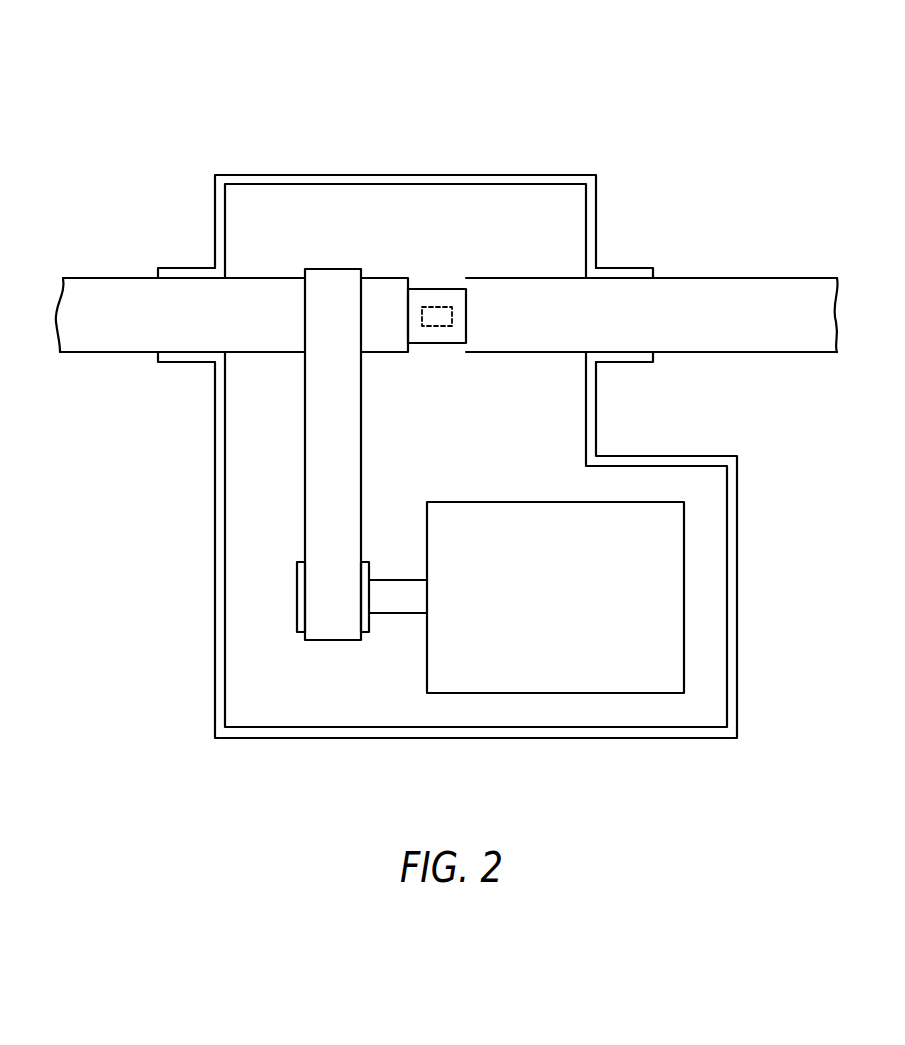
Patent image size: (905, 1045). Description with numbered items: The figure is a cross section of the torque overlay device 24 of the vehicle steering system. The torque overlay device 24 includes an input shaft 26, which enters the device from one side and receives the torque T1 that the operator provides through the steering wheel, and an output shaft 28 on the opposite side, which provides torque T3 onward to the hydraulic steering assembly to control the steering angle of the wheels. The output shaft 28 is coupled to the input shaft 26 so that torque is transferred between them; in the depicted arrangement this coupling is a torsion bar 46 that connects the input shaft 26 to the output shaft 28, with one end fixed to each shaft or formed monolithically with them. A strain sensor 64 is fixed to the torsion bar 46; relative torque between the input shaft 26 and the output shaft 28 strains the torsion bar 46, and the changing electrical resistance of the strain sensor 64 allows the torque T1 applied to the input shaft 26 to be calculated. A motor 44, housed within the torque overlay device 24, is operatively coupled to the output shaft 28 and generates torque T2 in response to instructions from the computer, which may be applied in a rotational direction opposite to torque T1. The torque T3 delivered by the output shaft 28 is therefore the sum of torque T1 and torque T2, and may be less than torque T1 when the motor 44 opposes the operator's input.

The torque overlay device 24 is at (202, 66).
The input shaft 26 is at (725, 290).
The output shaft 28 is at (137, 292).
The motor 44 is at (653, 539).
The torsion bar 46 is at (427, 288).
The strain sensor 64 is at (445, 327).
The torque applied to the input shaft T1 is at (504, 242).
The torque generated by the torque overlay device T2 is at (307, 250).
The torque provided by the output shaft T3 is at (87, 242).